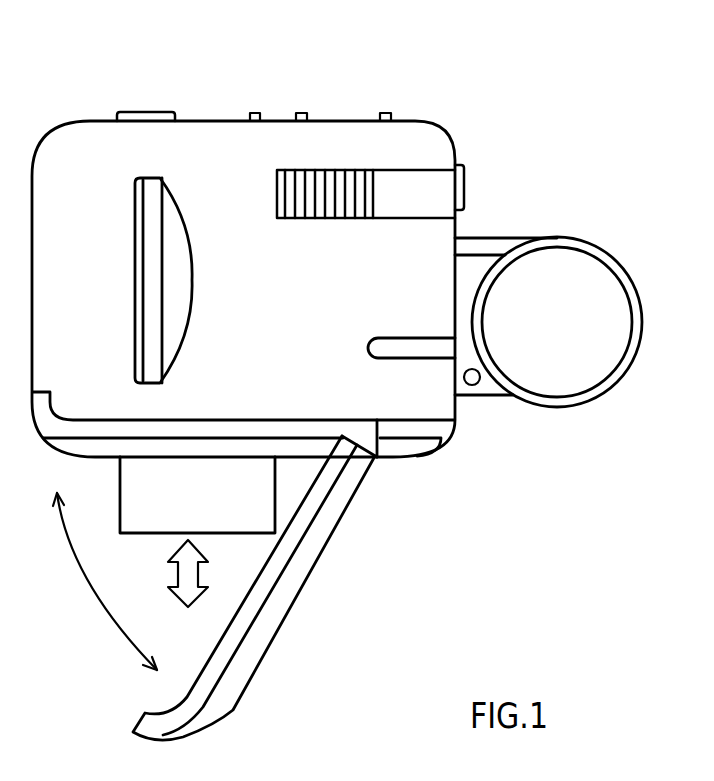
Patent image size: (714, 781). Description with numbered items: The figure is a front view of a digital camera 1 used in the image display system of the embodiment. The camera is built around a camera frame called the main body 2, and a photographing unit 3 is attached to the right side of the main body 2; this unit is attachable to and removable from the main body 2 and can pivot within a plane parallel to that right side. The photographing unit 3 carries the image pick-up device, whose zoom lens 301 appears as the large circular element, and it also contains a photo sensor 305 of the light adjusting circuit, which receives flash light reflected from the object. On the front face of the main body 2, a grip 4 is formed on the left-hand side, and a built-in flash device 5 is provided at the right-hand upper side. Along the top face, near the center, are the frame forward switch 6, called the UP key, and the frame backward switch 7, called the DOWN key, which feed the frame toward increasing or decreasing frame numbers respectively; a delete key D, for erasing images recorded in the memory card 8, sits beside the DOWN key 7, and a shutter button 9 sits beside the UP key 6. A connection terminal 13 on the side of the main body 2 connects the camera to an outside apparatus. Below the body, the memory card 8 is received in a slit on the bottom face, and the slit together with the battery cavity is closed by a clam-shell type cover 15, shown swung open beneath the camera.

The digital camera 1 is at (232, 72).
The main body 2 is at (207, 120).
The photographing unit 3 is at (566, 239).
The grip 4 is at (152, 320).
The built-in flash device 5 is at (343, 218).
The forward switch 6 is at (255, 113).
The backward switch 7 is at (301, 113).
The memory card 8 is at (134, 489).
The shutter button 9 is at (147, 114).
The connection terminal 13 is at (468, 190).
The clam-shell type cover 15 is at (313, 557).
The zoom lens 301 is at (598, 367).
The photo sensor 305 is at (473, 386).
The delete key D is at (384, 113).